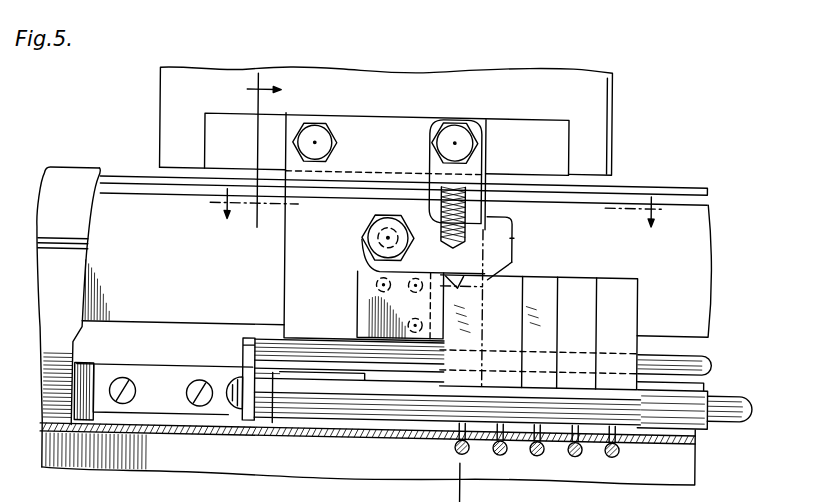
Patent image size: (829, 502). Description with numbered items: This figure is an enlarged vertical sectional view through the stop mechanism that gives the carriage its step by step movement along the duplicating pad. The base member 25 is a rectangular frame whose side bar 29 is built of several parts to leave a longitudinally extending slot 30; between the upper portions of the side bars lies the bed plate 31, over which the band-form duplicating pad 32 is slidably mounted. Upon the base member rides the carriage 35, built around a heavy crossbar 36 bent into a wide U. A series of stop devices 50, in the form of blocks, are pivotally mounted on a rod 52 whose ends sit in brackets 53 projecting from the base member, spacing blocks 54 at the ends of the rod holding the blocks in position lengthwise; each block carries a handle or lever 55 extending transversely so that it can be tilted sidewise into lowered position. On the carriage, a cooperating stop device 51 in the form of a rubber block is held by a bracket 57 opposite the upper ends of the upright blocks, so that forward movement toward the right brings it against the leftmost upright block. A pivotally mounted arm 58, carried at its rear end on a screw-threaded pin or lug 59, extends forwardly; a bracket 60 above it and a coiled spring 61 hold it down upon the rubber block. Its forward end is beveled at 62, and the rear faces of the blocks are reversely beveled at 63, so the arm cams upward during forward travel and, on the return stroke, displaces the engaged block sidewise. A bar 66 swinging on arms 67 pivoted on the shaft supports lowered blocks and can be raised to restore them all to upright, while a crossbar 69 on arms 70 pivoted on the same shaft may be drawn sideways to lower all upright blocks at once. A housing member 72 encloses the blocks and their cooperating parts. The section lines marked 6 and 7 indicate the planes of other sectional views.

The section line 6- 6 is at (340, 287).
The section line 7- 7 is at (438, 209).
The base member 25 is at (224, 457).
The side bar 29 is at (695, 243).
The longitudinally extending slot 30 is at (147, 320).
The bed plate 31 is at (700, 189).
The duplicating pad 32 is at (694, 179).
The carriage 35 is at (622, 121).
The crossbar 36 is at (287, 241).
The stop devices 50 is at (440, 281).
The cooperating stop device 51 is at (383, 290).
The rod 52 is at (733, 402).
The brackets 53 is at (287, 371).
The spacing blocks 54 is at (350, 374).
The handle or lever 55 is at (579, 446).
The bracket 57 is at (360, 272).
The pivotally mounted arm 58 is at (434, 212).
The screw-threaded pin or lug 59 is at (386, 228).
The bracket 60 is at (474, 199).
The coiled spring 61 is at (514, 221).
The beveled forward end portion 62 is at (505, 250).
The reversely beveled rear face portions 63 is at (461, 283).
The bar 66 is at (437, 400).
The arms 67 is at (269, 418).
The crossbar 69 is at (696, 344).
The arms 70 is at (246, 352).
The housing member 72 is at (147, 431).